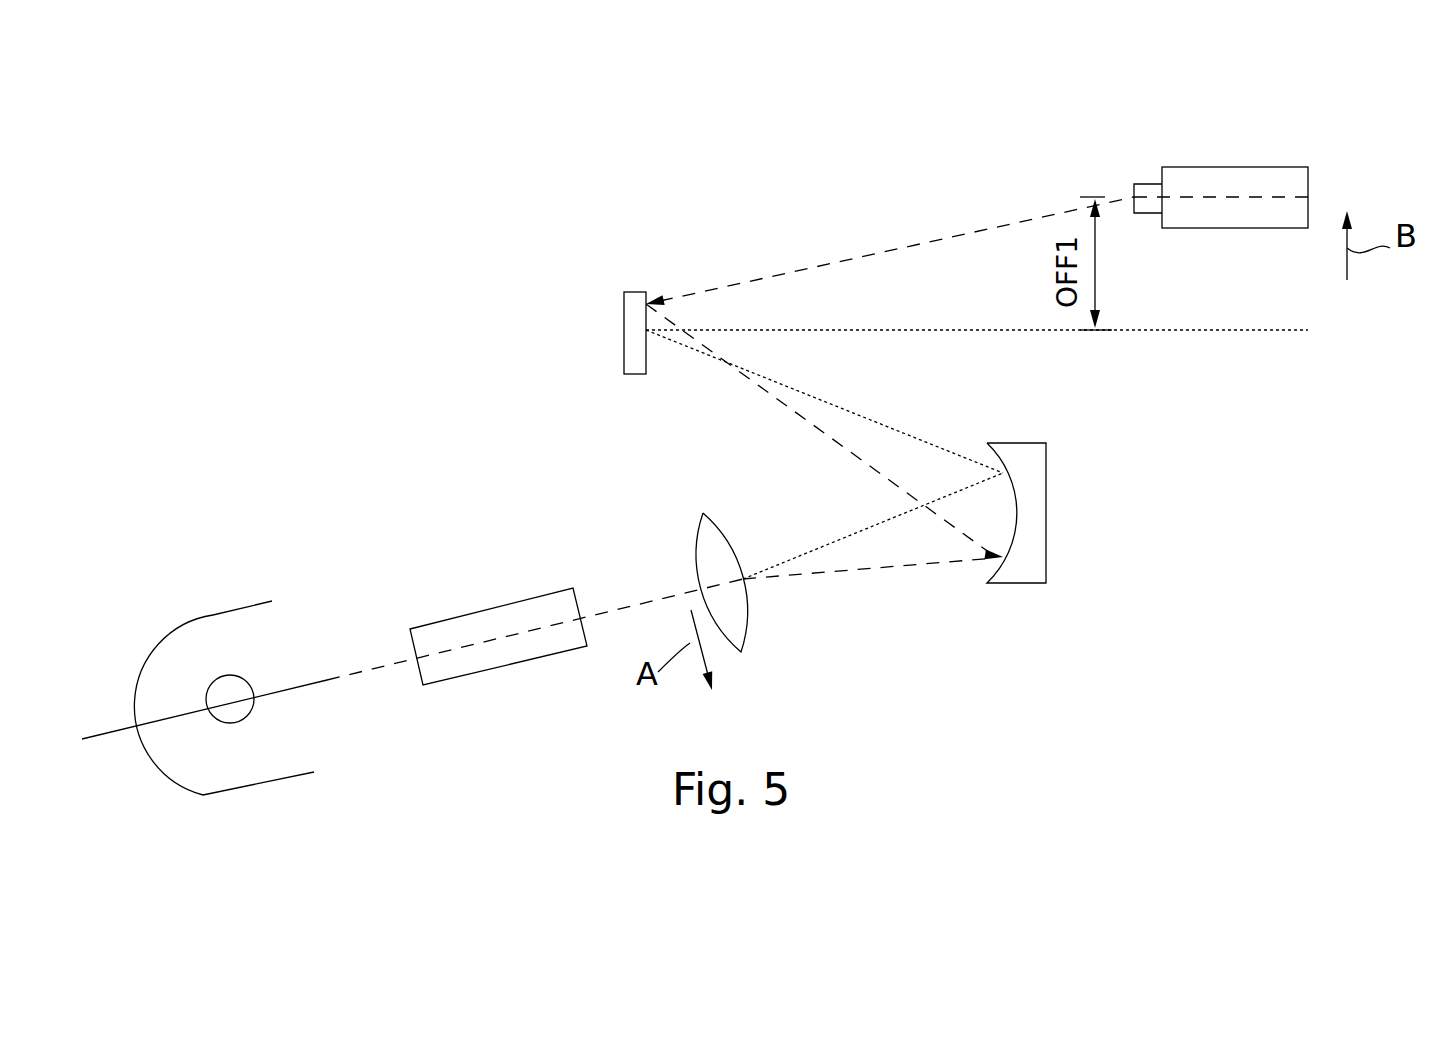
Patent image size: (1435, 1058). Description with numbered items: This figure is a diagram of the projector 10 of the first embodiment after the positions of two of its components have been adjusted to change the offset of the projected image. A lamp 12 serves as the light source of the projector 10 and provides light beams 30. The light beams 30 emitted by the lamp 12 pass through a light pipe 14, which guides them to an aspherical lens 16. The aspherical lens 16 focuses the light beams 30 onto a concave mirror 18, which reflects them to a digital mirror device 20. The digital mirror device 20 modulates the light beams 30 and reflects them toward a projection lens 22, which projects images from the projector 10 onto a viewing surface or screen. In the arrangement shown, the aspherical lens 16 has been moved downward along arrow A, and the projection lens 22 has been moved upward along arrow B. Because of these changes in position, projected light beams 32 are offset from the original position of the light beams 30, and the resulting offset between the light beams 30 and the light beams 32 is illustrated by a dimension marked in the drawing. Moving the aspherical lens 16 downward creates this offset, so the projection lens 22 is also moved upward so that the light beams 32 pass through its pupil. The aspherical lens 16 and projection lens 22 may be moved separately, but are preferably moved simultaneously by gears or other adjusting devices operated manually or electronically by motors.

The projector 10 is at (336, 280).
The lamp 12 is at (222, 613).
The light pipe 14 is at (490, 610).
The aspherical lens 16 is at (748, 615).
The concave mirror 18 is at (1047, 512).
The digital mirror device 20 is at (632, 290).
The projection lens 22 is at (1243, 167).
The light beams 30 is at (760, 330).
The projected light beams 32 is at (948, 237).